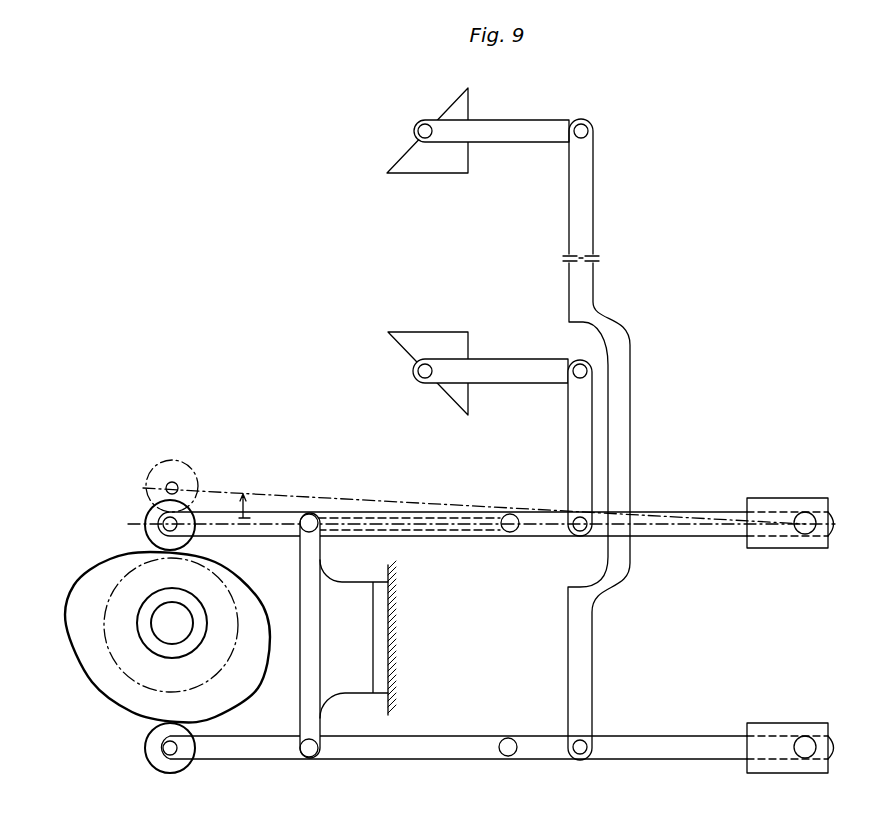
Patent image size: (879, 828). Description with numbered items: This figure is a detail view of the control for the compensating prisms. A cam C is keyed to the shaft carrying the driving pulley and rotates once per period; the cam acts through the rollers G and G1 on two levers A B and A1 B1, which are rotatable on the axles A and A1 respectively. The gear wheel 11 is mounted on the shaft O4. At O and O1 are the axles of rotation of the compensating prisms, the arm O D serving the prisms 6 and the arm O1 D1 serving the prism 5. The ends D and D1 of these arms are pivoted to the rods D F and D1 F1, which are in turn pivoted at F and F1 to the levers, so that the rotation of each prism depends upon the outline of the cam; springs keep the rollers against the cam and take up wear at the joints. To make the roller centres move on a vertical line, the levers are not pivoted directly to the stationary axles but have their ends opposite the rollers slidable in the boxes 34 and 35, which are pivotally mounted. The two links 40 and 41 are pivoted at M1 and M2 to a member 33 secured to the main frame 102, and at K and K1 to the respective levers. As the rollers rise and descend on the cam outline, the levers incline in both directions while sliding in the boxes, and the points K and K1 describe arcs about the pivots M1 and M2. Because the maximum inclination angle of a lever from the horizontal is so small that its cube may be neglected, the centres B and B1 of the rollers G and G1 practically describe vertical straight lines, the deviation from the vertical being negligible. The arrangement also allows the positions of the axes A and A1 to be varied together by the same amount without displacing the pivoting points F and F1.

The compensating prisms 6 is at (427, 130).
The compensating prism 5 is at (428, 373).
The axle of rotation of the compensating prisms O is at (491, 131).
The axle of rotation of the compensating prism O1 is at (490, 371).
The arm end pivot D is at (596, 429).
The arm end pivot D1 is at (581, 434).
The pivot point F1 is at (580, 542).
The pivot point F is at (580, 763).
The cam C is at (78, 662).
The gear wheel 11 is at (137, 683).
The shaft O4 is at (172, 623).
The roller G1 is at (146, 538).
The roller G is at (153, 766).
The link 41 is at (434, 528).
The link 40 is at (433, 736).
The roller centre B1 is at (164, 522).
The roller centre B is at (172, 755).
The pivot M2 is at (311, 518).
The pivot M1 is at (309, 758).
The pivot point K1 is at (510, 516).
The pivot point K is at (507, 757).
The member 33 is at (342, 592).
The main frame 102 is at (394, 628).
The box 35 is at (761, 500).
The box 34 is at (752, 773).
The axle A1 is at (807, 514).
The axle A is at (805, 758).